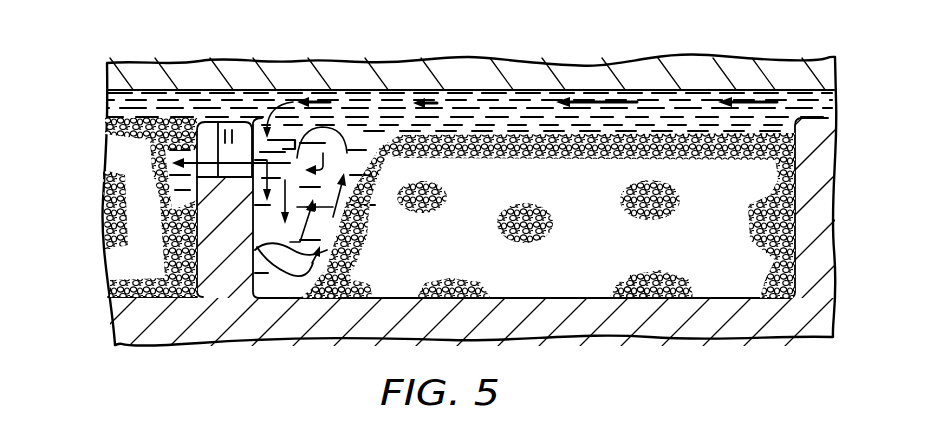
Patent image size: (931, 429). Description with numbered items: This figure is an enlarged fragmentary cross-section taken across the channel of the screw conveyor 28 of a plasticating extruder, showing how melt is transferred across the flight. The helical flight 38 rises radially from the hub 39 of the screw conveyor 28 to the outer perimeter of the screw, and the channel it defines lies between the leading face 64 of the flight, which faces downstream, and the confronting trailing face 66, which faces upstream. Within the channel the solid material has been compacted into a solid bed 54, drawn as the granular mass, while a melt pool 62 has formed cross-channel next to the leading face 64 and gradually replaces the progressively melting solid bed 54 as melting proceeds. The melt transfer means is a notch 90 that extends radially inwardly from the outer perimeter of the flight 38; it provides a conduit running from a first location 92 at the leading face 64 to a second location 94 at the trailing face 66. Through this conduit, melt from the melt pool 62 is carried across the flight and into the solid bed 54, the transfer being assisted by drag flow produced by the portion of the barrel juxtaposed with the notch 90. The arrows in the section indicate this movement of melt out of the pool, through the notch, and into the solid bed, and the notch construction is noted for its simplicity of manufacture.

The screw conveyor 28 is at (565, 305).
The helical flight 38 is at (195, 187).
The hub 39 is at (512, 297).
The solid bed 54 is at (632, 165).
The melt pool 62 is at (330, 168).
The leading face 64 is at (255, 275).
The trailing face 66 is at (538, 97).
The notch 90 is at (218, 120).
The first location 92 is at (255, 223).
The second location 94 is at (195, 199).